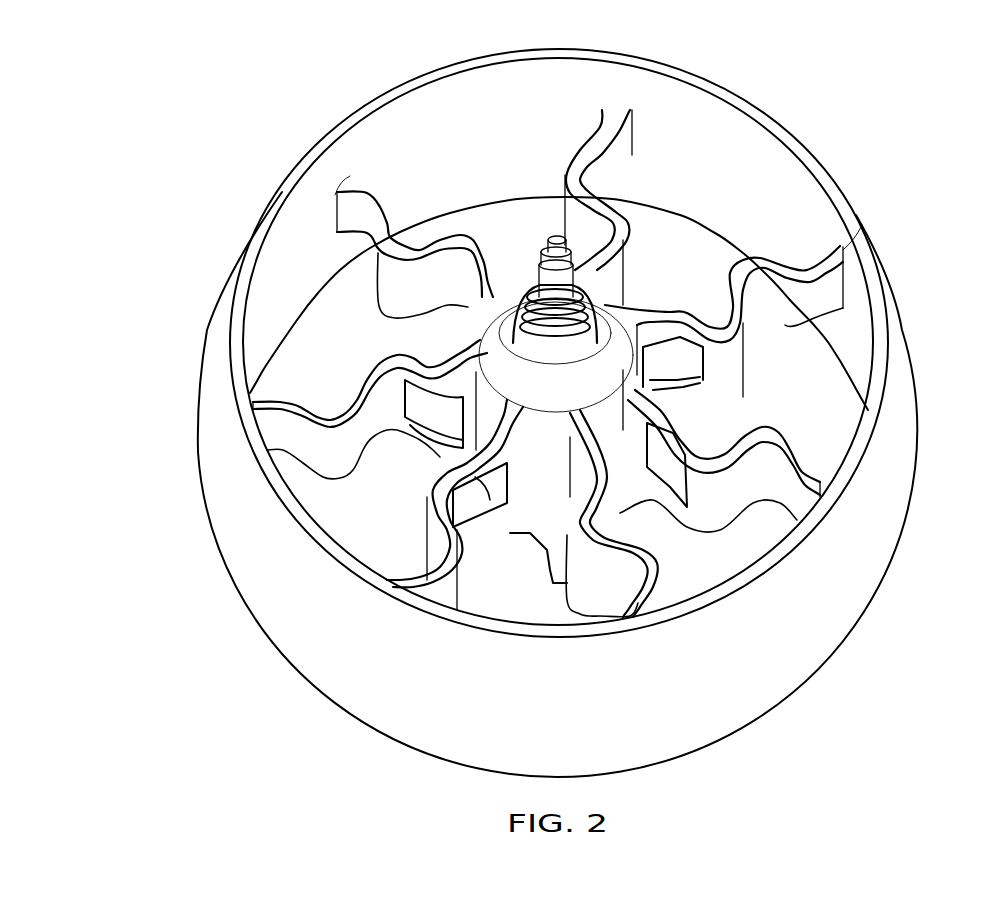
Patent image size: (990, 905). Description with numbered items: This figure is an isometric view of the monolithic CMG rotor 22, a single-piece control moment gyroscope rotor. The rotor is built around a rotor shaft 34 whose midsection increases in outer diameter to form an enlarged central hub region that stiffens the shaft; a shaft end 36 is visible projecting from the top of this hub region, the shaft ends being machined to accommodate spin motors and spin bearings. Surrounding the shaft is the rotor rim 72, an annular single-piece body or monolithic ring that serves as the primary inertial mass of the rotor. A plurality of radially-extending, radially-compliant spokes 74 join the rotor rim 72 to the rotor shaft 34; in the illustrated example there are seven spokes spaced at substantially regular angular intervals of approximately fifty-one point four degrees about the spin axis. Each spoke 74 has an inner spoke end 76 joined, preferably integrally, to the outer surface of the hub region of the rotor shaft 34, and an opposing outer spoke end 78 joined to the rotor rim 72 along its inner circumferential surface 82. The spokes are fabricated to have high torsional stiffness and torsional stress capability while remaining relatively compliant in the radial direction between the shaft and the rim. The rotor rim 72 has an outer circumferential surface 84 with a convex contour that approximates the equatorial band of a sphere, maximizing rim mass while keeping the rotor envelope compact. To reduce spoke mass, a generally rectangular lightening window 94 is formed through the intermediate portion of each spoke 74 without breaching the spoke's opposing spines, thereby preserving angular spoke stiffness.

The monolithic CMG rotor 22 is at (570, 399).
The rotor shaft 34 is at (566, 398).
The spindle 36 is at (547, 270).
The rotor rim 72 is at (585, 399).
The radially-compliant spokes 74 is at (352, 360).
The inner spoke end 76 is at (494, 290).
The outer spoke end 78 is at (607, 115).
The inner circumferential surface 82 is at (512, 82).
The outer circumferential surface 84 is at (248, 582).
The window 94 is at (697, 375).